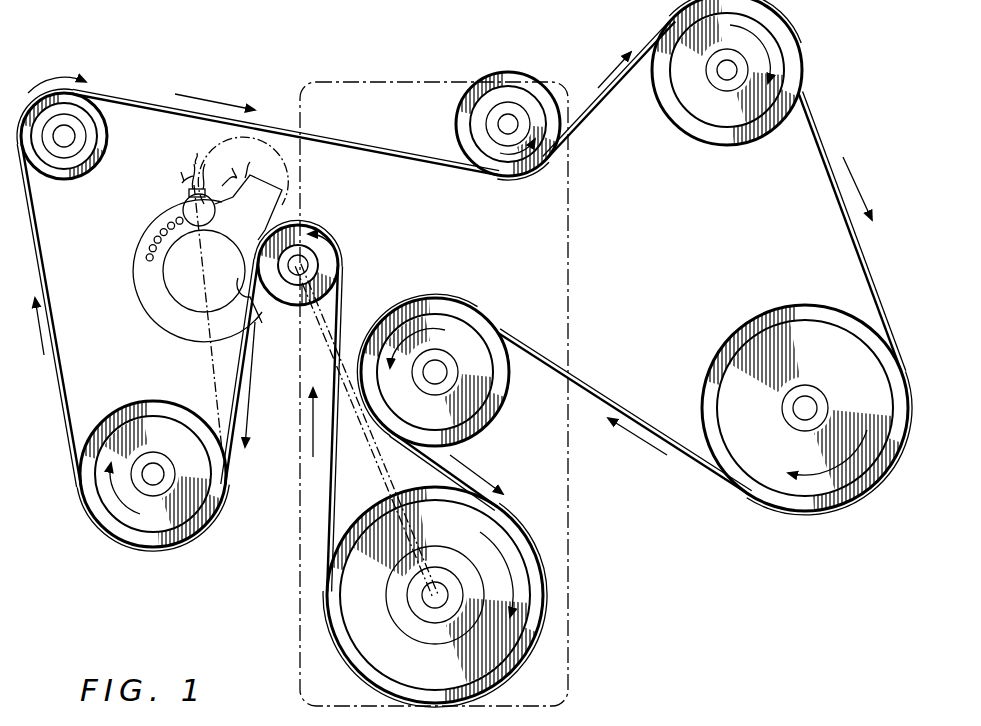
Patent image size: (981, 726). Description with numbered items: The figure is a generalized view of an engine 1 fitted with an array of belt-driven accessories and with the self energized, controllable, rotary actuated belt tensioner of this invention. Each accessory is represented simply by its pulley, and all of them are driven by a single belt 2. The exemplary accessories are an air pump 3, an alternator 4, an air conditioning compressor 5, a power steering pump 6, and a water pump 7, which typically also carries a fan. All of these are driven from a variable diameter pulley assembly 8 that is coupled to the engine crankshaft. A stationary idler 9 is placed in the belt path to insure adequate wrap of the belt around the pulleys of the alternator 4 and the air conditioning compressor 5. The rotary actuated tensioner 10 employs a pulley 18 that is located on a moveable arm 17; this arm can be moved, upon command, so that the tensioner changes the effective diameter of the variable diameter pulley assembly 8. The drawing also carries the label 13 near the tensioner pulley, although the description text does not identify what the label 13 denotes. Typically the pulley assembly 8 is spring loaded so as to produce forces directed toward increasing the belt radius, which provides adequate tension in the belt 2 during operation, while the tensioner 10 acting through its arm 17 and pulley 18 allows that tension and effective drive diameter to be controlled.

The engine 1 is at (572, 518).
The belt 2 is at (412, 158).
The air pump 3 is at (224, 489).
The alternator 4 is at (100, 145).
The air conditioning compressor 5 is at (752, 143).
The power steering pump 6 is at (800, 304).
The water pump 7 is at (501, 406).
The variable diameter pulley assembly 8 is at (513, 522).
The stationary idler 9 is at (544, 88).
The rotary actuated tensioner 10 is at (155, 204).
The tensioner pulley 13 is at (336, 254).
The moveable arm 17 is at (246, 312).
The pulley 18 is at (192, 188).